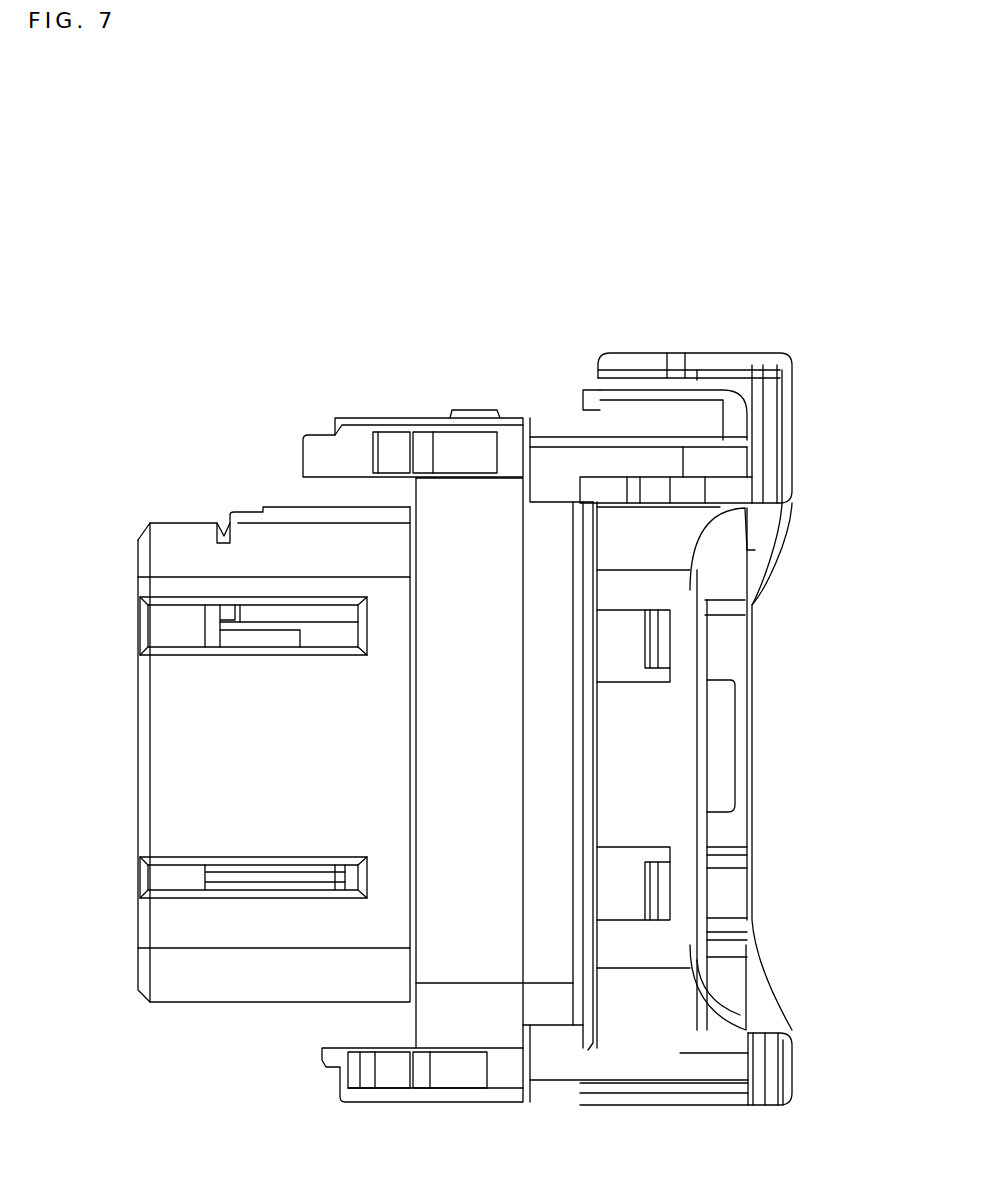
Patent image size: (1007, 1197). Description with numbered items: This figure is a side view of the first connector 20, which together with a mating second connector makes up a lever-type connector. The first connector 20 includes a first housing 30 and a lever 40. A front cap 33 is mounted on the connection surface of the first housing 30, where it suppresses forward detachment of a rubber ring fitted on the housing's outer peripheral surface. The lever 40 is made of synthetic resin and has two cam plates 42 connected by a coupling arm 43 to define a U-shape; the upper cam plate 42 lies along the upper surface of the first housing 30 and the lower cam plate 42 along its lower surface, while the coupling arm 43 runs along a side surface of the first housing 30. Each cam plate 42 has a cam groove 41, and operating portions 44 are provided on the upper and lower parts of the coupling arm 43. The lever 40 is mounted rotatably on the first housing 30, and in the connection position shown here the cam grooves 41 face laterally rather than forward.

The first connector 20 is at (451, 198).
The first housing 30 is at (287, 492).
The front cap 33 is at (180, 540).
The lever 40 is at (538, 392).
The cam groove 41 is at (468, 450).
The cam plate 42 is at (368, 432).
The coupling arm 43 is at (750, 990).
The operating portion 44 is at (775, 428).